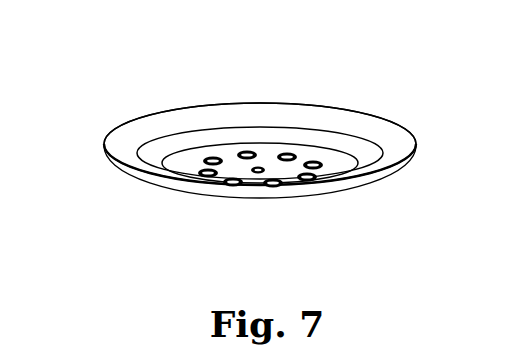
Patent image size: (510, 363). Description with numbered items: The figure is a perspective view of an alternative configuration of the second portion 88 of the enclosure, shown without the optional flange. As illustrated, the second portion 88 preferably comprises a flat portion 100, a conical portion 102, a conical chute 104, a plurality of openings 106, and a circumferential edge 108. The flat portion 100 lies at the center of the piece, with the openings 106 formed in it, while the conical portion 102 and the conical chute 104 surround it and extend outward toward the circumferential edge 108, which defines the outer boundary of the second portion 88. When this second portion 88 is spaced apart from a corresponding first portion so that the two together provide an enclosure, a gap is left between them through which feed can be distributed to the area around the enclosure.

The second portion 88 is at (348, 122).
The flat portion 100 is at (335, 162).
The conical portion 102 is at (140, 118).
The conical chute 104 is at (265, 123).
The openings 106 is at (213, 157).
The circumferential edge 108 is at (399, 157).